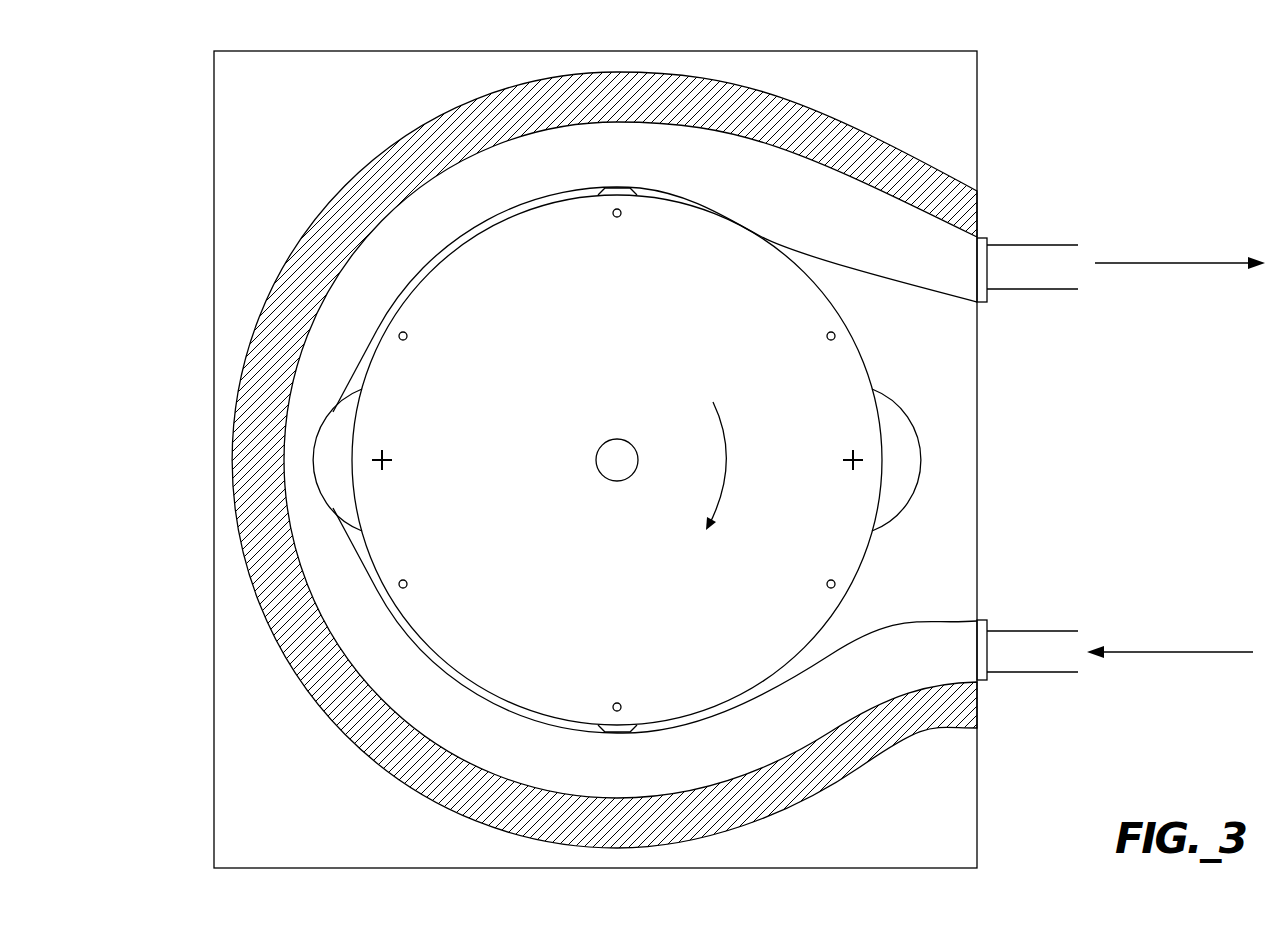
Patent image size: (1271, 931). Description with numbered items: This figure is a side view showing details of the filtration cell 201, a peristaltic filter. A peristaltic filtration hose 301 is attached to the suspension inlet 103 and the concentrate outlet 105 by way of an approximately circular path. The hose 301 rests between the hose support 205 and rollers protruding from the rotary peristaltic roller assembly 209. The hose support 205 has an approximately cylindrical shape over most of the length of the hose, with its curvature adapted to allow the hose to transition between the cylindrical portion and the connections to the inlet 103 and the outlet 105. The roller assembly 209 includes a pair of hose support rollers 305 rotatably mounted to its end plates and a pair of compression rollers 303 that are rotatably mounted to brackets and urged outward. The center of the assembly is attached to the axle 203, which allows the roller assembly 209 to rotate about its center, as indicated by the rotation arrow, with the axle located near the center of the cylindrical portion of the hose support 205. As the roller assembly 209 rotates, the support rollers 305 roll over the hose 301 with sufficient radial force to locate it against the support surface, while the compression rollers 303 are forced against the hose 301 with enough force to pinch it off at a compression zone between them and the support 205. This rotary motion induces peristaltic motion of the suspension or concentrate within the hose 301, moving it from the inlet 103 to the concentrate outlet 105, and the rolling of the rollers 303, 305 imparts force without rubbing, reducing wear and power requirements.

The filtration cell 201 is at (166, 184).
The hose support 205 is at (958, 200).
The peristaltic filtration hose 301 is at (948, 268).
The concentrate outlet 105 is at (984, 303).
The suspension inlet 103 is at (983, 682).
The rotary peristaltic roller assembly 209 is at (933, 528).
The axle 203 is at (617, 439).
The compression rollers 303 is at (313, 455).
The hose support rollers 305 is at (617, 188).